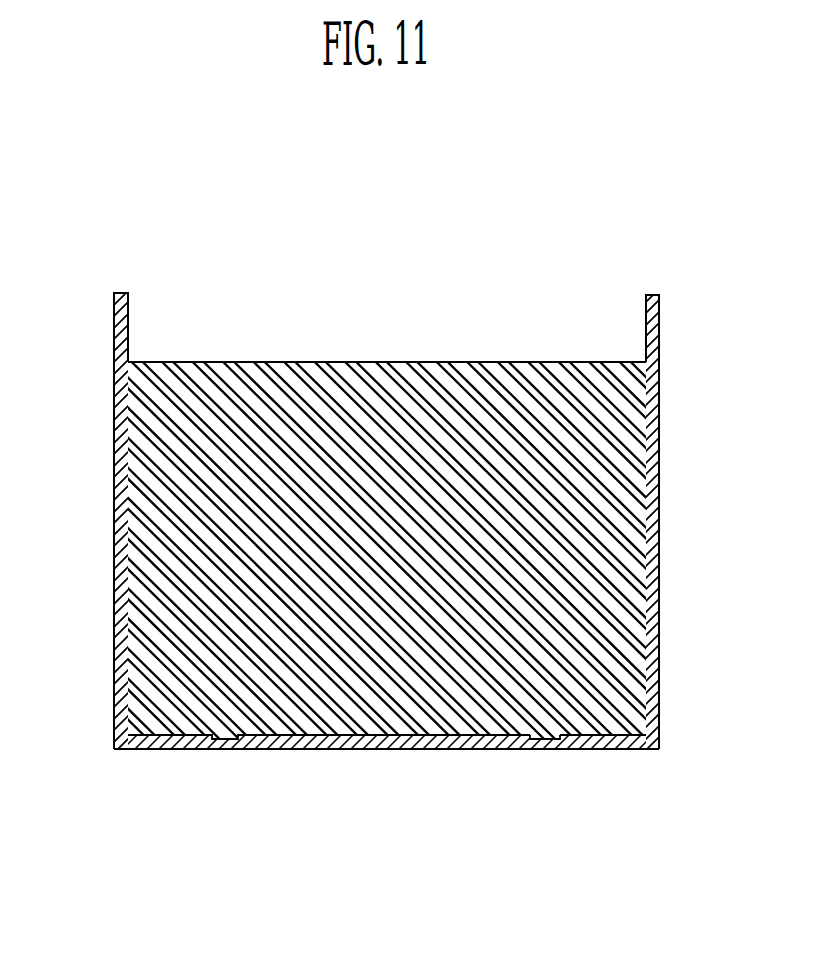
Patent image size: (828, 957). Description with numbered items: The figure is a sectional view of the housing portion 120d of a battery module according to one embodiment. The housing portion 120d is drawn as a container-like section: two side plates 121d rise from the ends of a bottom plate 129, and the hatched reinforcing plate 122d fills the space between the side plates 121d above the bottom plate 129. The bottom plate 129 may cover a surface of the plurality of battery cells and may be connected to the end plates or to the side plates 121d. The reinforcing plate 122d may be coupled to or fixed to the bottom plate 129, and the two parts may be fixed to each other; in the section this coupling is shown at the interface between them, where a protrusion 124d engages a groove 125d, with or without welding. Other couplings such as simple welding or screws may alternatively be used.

The housing portion 120d is at (106, 210).
The side plate 121d is at (651, 262).
The reinforcing plate 122d is at (357, 333).
The protrusion 124d is at (527, 747).
The groove 125d is at (577, 749).
The bottom plate 129 is at (322, 768).